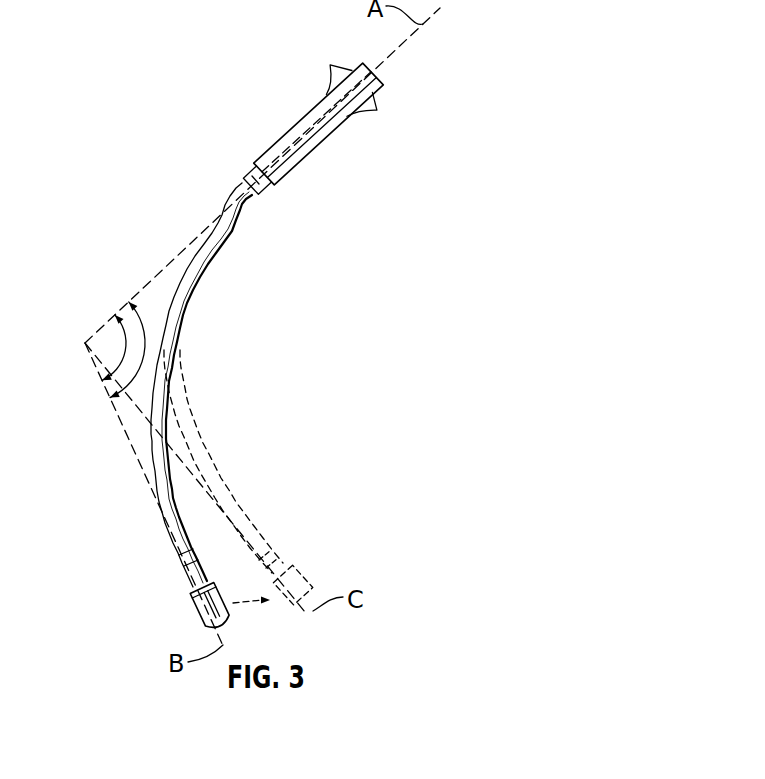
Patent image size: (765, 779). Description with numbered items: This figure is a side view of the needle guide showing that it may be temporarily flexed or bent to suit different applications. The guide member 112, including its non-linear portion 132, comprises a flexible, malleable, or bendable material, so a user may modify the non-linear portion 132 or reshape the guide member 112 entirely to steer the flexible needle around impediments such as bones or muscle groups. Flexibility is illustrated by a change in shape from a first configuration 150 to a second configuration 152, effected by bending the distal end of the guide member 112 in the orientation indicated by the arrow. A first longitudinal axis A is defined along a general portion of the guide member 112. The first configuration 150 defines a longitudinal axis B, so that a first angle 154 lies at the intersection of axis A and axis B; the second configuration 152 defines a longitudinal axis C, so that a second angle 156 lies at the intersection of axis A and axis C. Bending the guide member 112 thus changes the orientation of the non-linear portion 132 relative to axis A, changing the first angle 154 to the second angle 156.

The guide member 112 is at (247, 180).
The non-linear portion 132 is at (132, 510).
The first configuration 150 is at (198, 611).
The second configuration 152 is at (301, 580).
The first angle 154 is at (118, 371).
The second angle 156 is at (147, 341).